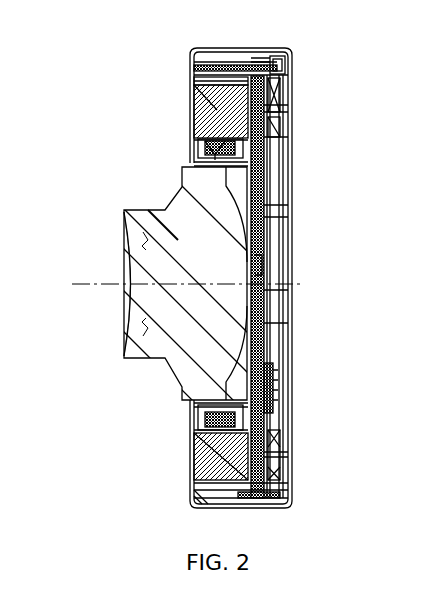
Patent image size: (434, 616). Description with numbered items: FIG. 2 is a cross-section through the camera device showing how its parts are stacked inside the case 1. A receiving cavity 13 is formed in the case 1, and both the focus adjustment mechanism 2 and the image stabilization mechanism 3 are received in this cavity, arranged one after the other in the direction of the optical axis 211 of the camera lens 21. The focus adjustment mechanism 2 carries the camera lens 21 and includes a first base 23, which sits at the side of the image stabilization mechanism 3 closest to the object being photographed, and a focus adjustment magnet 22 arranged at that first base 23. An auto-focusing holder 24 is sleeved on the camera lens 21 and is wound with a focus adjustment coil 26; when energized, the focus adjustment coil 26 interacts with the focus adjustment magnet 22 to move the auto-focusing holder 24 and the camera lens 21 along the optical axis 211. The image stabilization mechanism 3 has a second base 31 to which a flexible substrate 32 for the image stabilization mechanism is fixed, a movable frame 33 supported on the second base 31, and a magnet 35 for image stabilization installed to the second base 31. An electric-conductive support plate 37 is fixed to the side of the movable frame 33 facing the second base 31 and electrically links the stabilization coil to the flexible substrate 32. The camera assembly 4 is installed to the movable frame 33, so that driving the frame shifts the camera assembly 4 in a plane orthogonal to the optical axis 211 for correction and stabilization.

The case 1 is at (243, 48).
The receiving cavity 13 is at (232, 64).
The focus adjustment mechanism 2 is at (57, 49).
The camera lens 21 is at (152, 208).
The optical axis 211 is at (107, 283).
The focus adjustment magnet 22 is at (205, 95).
The first base 23 is at (196, 82).
The auto-focusing holder 24 is at (205, 145).
The focus adjustment coil 26 is at (214, 136).
The image stabilization mechanism 3 is at (339, 24).
The second base 31 is at (276, 80).
The flexible substrate for the image stabilization mechanism 32 is at (270, 58).
The movable frame 33 is at (268, 185).
The magnet for image stabilization 35 is at (277, 102).
The electric-conductive support plate 37 is at (266, 130).
The camera assembly 4 is at (258, 268).